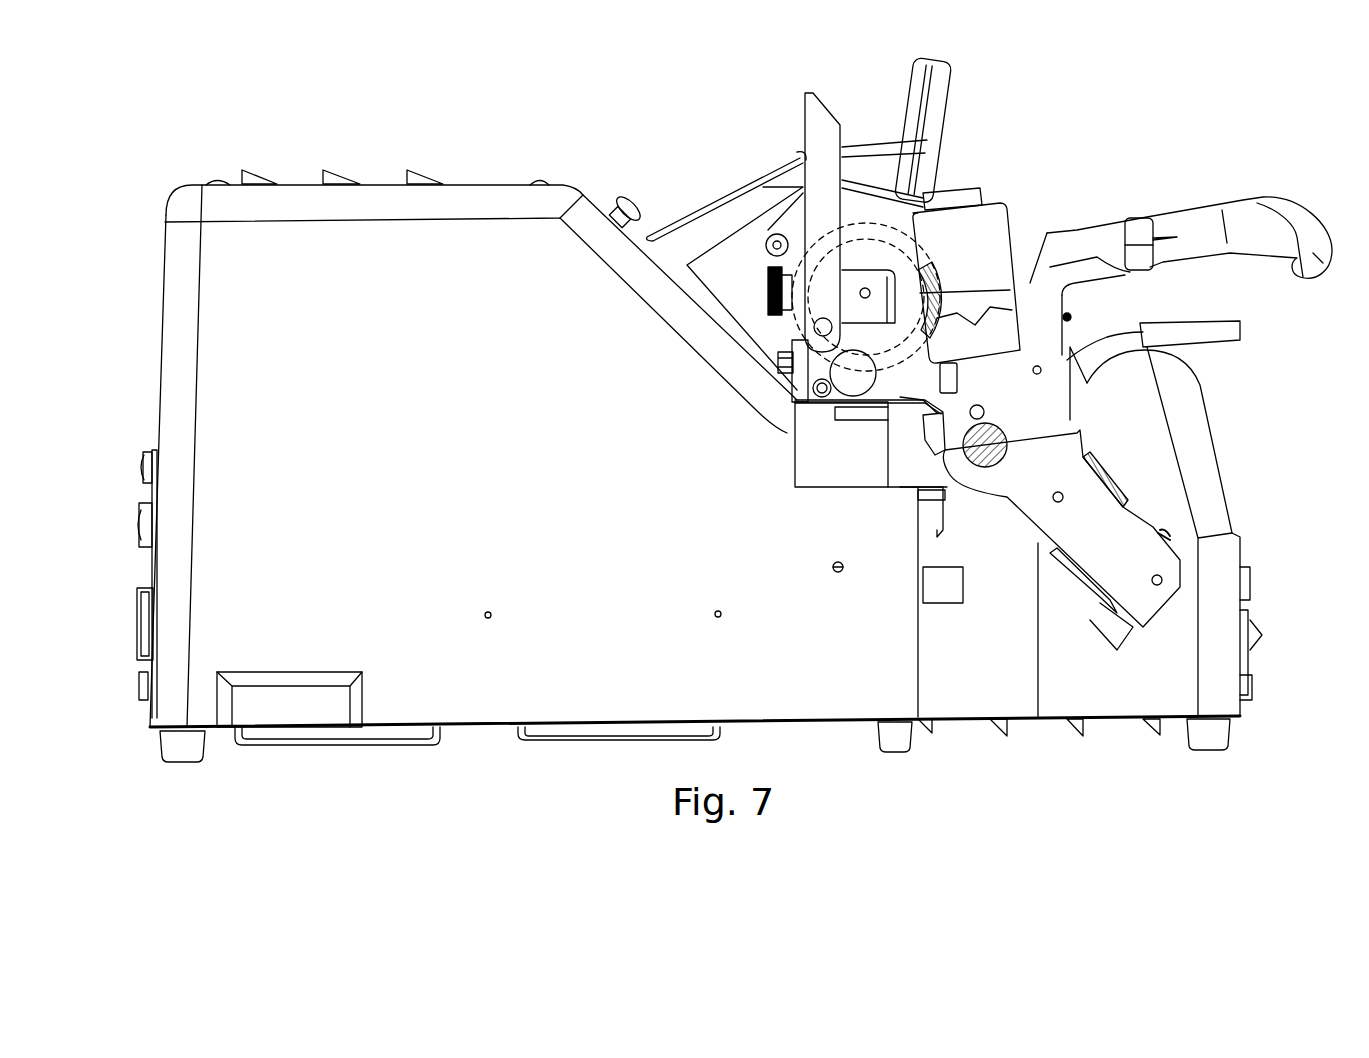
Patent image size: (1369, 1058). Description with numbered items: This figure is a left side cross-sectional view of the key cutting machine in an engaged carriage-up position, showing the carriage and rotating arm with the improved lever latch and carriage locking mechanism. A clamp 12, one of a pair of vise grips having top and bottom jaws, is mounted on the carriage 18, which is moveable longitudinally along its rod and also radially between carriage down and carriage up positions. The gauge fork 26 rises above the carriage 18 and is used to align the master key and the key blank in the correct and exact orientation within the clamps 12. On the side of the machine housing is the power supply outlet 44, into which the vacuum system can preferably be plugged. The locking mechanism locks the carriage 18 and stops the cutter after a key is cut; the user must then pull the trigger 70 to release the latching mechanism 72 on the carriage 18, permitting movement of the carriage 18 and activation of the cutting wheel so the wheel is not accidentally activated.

The clamp 12 is at (998, 240).
The carriage 18 is at (1050, 378).
The gauge fork 26 is at (817, 102).
The power supply outlet 44 is at (138, 620).
The trigger 70 is at (1227, 343).
The latching mechanism 72 is at (1013, 560).